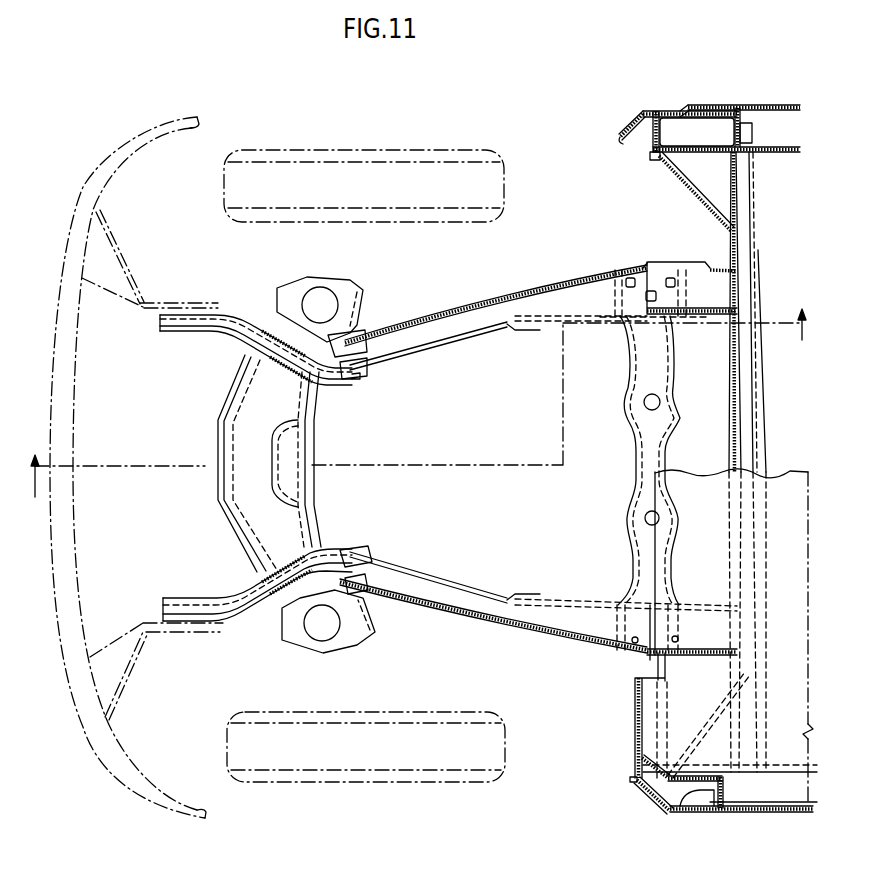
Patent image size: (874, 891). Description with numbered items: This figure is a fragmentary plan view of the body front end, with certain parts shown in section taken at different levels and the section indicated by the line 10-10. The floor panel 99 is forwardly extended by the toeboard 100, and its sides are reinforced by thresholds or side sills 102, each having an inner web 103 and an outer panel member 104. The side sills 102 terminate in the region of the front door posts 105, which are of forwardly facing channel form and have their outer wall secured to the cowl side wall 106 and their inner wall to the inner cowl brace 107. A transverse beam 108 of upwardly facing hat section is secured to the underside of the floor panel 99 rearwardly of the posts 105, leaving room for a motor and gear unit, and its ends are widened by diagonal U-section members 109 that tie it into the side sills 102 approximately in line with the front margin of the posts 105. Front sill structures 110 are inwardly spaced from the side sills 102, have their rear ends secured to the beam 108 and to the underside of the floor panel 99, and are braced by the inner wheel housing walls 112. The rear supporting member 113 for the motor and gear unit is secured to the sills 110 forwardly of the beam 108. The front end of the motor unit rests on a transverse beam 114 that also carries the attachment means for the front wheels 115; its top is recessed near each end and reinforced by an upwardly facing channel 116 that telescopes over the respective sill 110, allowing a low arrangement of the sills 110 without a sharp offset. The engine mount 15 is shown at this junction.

The section line 10- 10 is at (414, 391).
The engine mount 15 is at (320, 301).
The floor panel 99 is at (790, 478).
The toeboard 100 is at (634, 730).
The side sill 102 is at (778, 119).
The inner web 103 is at (782, 154).
The outer panel member 104 is at (737, 100).
The front door post 105 is at (707, 119).
The cowl side wall 106 is at (619, 118).
The inner cowl brace 107 is at (651, 767).
The transverse beam 108 is at (762, 380).
The diagonal U-section member 109 is at (707, 199).
The front sill structure 110 is at (450, 598).
The inner wheel housing wall 112 is at (530, 293).
The rear supporting member 113 is at (630, 376).
The transverse beam 114 is at (292, 522).
The front wheel 115 is at (370, 155).
The upwardly facing channel 116 is at (338, 380).